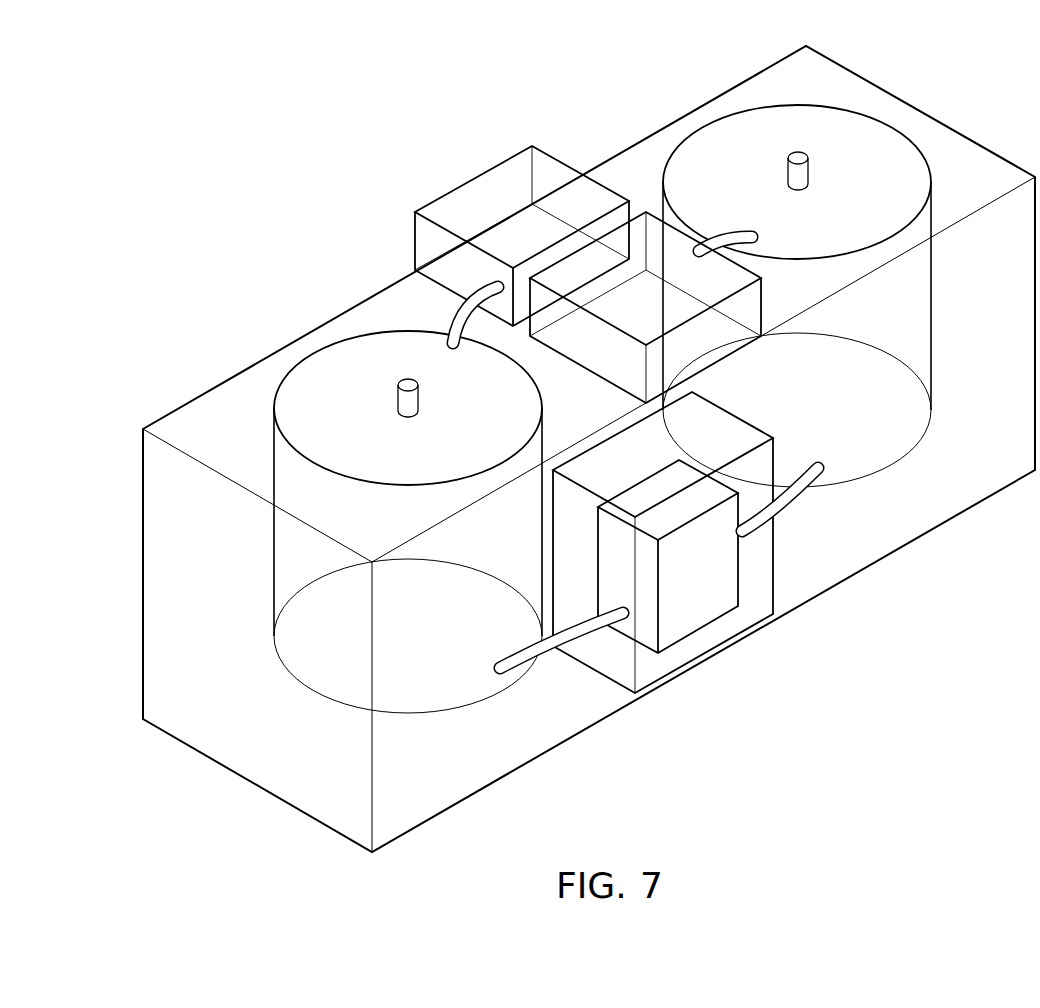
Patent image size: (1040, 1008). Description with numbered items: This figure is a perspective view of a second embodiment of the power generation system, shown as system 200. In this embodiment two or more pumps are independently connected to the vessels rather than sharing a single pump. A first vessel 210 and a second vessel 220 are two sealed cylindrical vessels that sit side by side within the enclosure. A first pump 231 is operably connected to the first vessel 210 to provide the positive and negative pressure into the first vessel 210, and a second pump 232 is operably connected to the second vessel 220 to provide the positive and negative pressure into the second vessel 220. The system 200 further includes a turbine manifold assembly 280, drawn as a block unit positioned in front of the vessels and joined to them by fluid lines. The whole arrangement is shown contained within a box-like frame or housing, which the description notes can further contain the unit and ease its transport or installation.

The system 200 is at (258, 146).
The first vessel 210 is at (332, 373).
The second vessel 220 is at (874, 145).
The first pump 231 is at (482, 195).
The second pump 232 is at (657, 243).
The turbine manifold assembly 280 is at (752, 592).